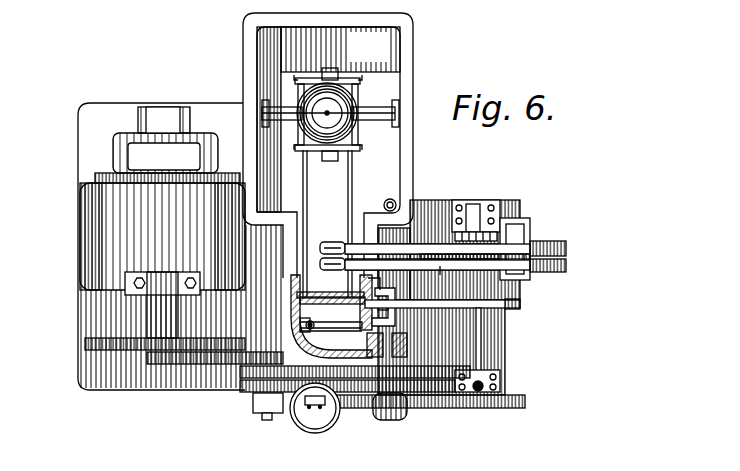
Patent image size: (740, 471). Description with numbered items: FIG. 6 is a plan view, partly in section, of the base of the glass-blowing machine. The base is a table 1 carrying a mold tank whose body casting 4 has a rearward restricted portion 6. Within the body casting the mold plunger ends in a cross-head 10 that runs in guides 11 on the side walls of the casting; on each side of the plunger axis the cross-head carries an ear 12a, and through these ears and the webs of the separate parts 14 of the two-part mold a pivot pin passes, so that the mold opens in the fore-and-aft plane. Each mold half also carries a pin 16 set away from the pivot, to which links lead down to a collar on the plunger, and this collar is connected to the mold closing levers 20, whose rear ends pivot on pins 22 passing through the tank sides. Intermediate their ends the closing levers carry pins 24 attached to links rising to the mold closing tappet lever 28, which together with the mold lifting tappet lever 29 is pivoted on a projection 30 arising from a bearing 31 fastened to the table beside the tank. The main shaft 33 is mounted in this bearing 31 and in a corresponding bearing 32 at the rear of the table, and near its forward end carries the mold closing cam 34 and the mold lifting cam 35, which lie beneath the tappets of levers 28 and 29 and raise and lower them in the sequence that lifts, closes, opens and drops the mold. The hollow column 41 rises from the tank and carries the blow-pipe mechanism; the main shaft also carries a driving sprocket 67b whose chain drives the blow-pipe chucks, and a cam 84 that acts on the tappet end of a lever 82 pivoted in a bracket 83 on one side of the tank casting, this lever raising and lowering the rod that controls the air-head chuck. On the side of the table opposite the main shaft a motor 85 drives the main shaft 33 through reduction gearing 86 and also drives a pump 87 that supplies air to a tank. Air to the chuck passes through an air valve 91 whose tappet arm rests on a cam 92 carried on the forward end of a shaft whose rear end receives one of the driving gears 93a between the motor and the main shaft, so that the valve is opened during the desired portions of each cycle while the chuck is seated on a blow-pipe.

The table 1 is at (78, 128).
The body casting 4 is at (413, 72).
The rearward restricted portion 6 is at (360, 228).
The cross-head 10 is at (376, 110).
The guides 11 is at (399, 110).
The coil 12a is at (340, 72).
The separate parts of two-part mold 14 is at (355, 128).
The pin 16 is at (316, 150).
The mold closing levers 20 is at (356, 190).
The pins 22 is at (330, 287).
The pins 24 is at (324, 246).
The mold closing tappet lever 28 is at (434, 232).
The mold lifting tappet lever 29 is at (440, 266).
The projection 30 is at (516, 222).
The bearing 31 is at (483, 204).
The bearing 32 is at (500, 381).
The main shaft 33 is at (482, 346).
The mold closing cam 34 is at (562, 244).
The mold lifting cam 35 is at (572, 267).
The column 41 is at (291, 326).
The driving sprocket 67b is at (497, 236).
The lever 82 is at (457, 310).
The bracket 83 is at (392, 314).
The cam 84 is at (522, 305).
The motor 85 is at (92, 238).
The reduction gearing 86 is at (185, 364).
The pump 87 is at (308, 424).
The air valve 91 is at (436, 267).
The cam 92 is at (440, 332).
The driving gear 93a is at (443, 396).